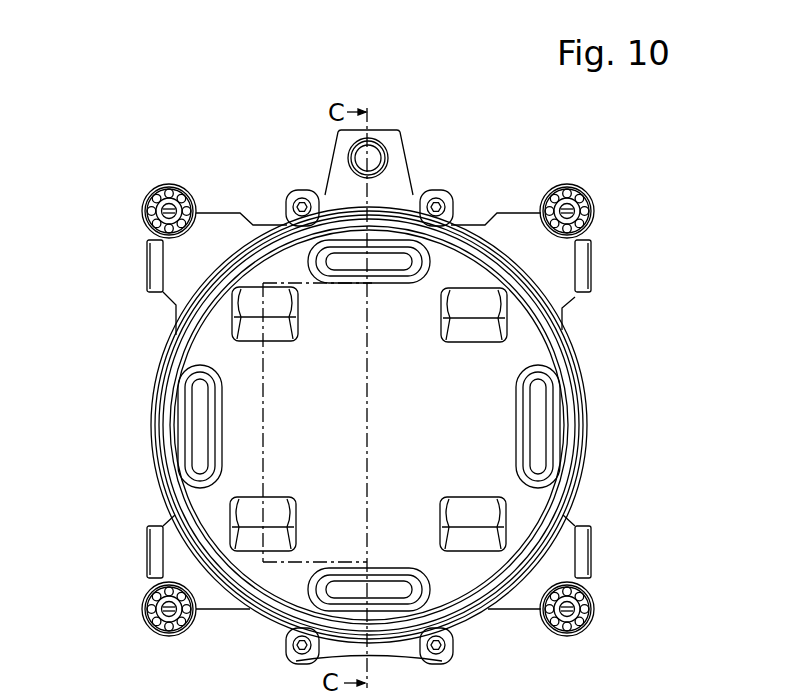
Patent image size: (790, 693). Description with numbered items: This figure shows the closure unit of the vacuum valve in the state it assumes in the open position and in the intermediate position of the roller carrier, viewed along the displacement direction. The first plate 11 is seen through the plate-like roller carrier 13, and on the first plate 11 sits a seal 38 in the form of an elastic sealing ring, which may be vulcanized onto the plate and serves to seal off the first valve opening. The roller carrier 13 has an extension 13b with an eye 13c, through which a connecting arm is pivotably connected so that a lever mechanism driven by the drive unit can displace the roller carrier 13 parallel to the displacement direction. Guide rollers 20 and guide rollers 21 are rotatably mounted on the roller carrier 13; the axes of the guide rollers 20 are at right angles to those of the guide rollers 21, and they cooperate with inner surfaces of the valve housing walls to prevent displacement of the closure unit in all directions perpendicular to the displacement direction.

The first plate 11 is at (530, 503).
The roller carrier 13 is at (557, 290).
The extension 13b is at (397, 185).
The eye 13c is at (360, 160).
The guide rollers 20 is at (149, 625).
The guide rollers 21 is at (151, 546).
The seal 38 is at (576, 432).